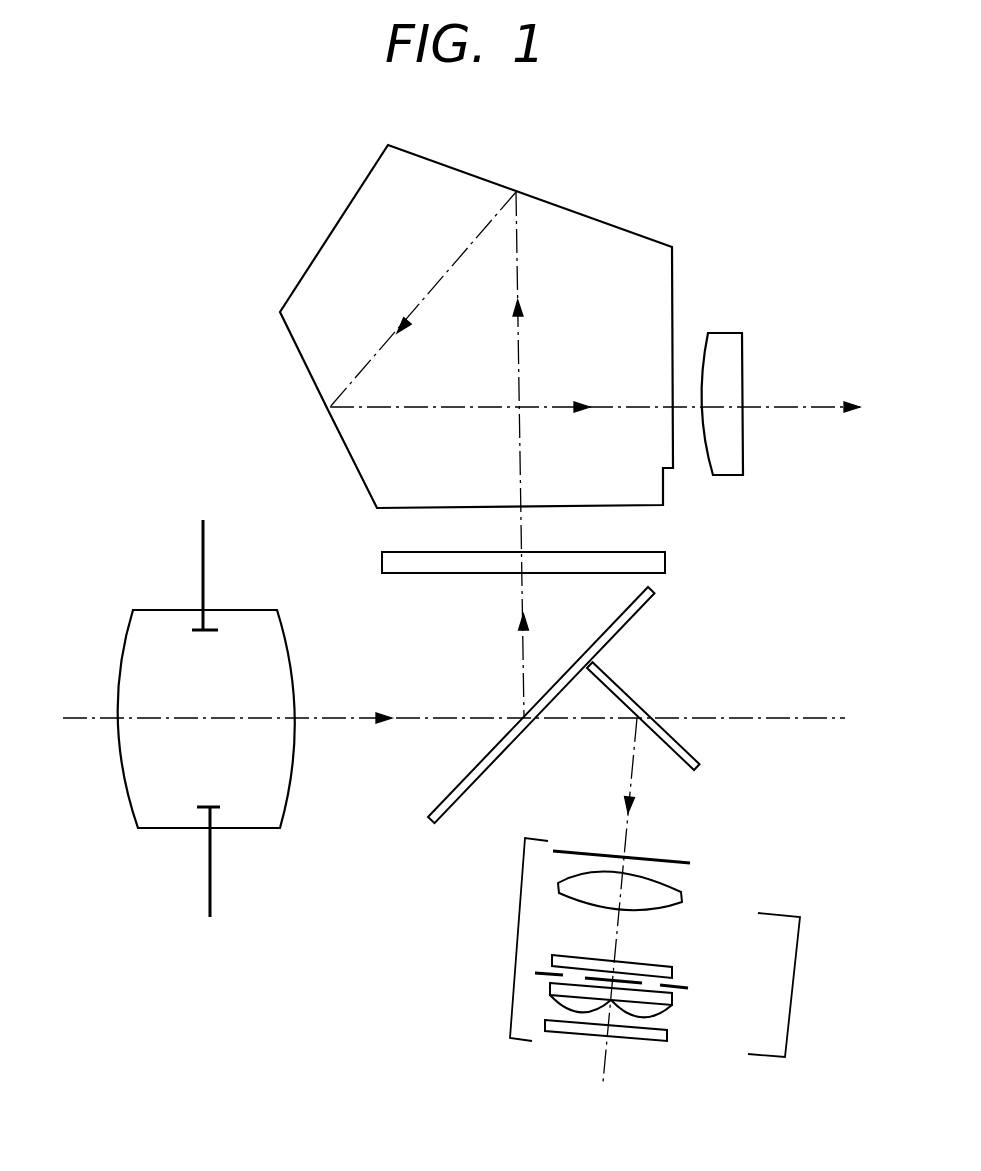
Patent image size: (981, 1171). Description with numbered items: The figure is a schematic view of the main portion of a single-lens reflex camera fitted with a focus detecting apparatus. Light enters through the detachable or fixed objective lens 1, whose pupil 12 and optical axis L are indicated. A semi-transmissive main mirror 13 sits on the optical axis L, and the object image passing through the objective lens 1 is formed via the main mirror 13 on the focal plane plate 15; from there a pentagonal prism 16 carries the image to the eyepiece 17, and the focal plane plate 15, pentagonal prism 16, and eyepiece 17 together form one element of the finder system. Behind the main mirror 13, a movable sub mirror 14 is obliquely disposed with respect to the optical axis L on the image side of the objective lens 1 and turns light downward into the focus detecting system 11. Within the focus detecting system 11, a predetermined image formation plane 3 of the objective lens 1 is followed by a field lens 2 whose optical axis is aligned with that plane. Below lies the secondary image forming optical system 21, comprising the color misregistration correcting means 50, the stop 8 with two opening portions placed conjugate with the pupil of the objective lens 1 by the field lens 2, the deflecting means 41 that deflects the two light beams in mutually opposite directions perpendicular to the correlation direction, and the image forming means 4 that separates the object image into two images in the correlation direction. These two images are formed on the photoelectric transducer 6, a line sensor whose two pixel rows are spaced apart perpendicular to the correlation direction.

The objective lens 1 is at (138, 826).
The pupil 12 is at (205, 555).
The main mirror 13 is at (430, 822).
The sub mirror 14 is at (700, 763).
The focal plane plate 15 is at (665, 560).
The pentagonal prism 16 is at (308, 373).
The eyepiece 17 is at (743, 465).
The focus detecting system 11 is at (515, 939).
The secondary image forming optical system 21 is at (790, 985).
The predetermined image formation plane 3 is at (690, 862).
The field lens 2 is at (682, 896).
The color misregistration correcting means 50 is at (672, 970).
The stop 8 is at (688, 987).
The deflecting means 41 is at (672, 1003).
The image forming means 4 is at (660, 1013).
The photoelectric transducer 6 is at (650, 1040).
The optical axis L is at (78, 720).